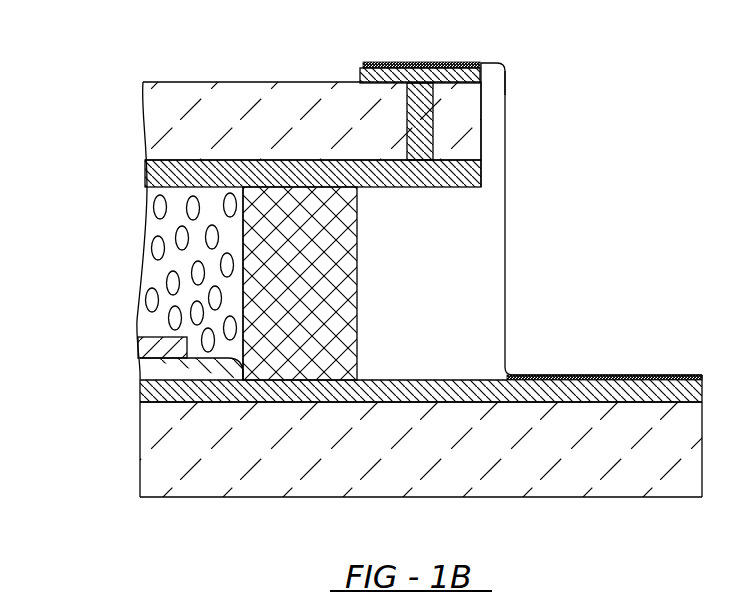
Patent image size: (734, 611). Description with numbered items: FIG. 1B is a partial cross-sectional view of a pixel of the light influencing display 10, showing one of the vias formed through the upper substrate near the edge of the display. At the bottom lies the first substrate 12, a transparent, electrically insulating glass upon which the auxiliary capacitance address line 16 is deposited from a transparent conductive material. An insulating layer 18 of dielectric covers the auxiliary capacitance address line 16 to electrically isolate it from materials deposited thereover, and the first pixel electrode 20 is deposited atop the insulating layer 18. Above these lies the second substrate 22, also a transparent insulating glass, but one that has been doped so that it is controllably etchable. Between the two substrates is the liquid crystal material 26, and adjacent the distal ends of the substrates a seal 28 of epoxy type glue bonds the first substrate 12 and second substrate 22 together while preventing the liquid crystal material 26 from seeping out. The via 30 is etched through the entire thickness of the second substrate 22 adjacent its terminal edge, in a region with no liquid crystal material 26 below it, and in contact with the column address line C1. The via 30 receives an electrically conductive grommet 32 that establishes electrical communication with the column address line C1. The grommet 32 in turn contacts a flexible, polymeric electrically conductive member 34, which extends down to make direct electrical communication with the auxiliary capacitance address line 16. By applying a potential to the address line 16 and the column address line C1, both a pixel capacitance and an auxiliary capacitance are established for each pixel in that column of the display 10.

The display 10 is at (605, 150).
The first substrate 12 is at (145, 440).
The auxiliary capacitance address line 16 is at (140, 388).
The insulating layer 18 is at (142, 370).
The first pixel electrode 20 is at (140, 345).
The second substrate 22 is at (221, 97).
The liquid crystal material 26 is at (157, 228).
The seal 28 is at (357, 336).
The via 30 is at (407, 117).
The electrically conductive grommet 32 is at (505, 83).
The flexible electrically conductive member 34 is at (505, 253).
The column address line C1 is at (145, 170).